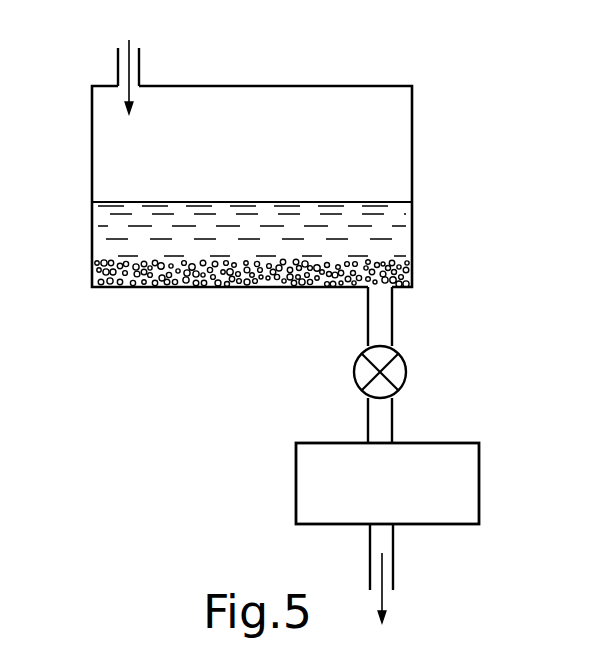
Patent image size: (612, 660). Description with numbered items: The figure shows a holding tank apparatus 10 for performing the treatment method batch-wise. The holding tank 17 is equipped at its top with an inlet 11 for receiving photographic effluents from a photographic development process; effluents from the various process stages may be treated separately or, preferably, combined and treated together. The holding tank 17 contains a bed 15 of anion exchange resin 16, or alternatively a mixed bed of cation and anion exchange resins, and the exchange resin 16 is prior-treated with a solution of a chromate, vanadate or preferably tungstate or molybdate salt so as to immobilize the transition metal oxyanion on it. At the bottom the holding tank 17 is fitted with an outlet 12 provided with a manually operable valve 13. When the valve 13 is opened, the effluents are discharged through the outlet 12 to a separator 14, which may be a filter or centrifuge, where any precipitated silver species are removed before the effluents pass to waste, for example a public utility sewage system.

The holding tank apparatus 10 is at (272, 329).
The inlet 11 is at (138, 62).
The outlet 12 is at (393, 310).
The manually operable valve 13 is at (365, 375).
The separator 14 is at (422, 450).
The bed 15 is at (347, 233).
The anion exchange resin 16 is at (115, 272).
The holding tank 17 is at (92, 177).